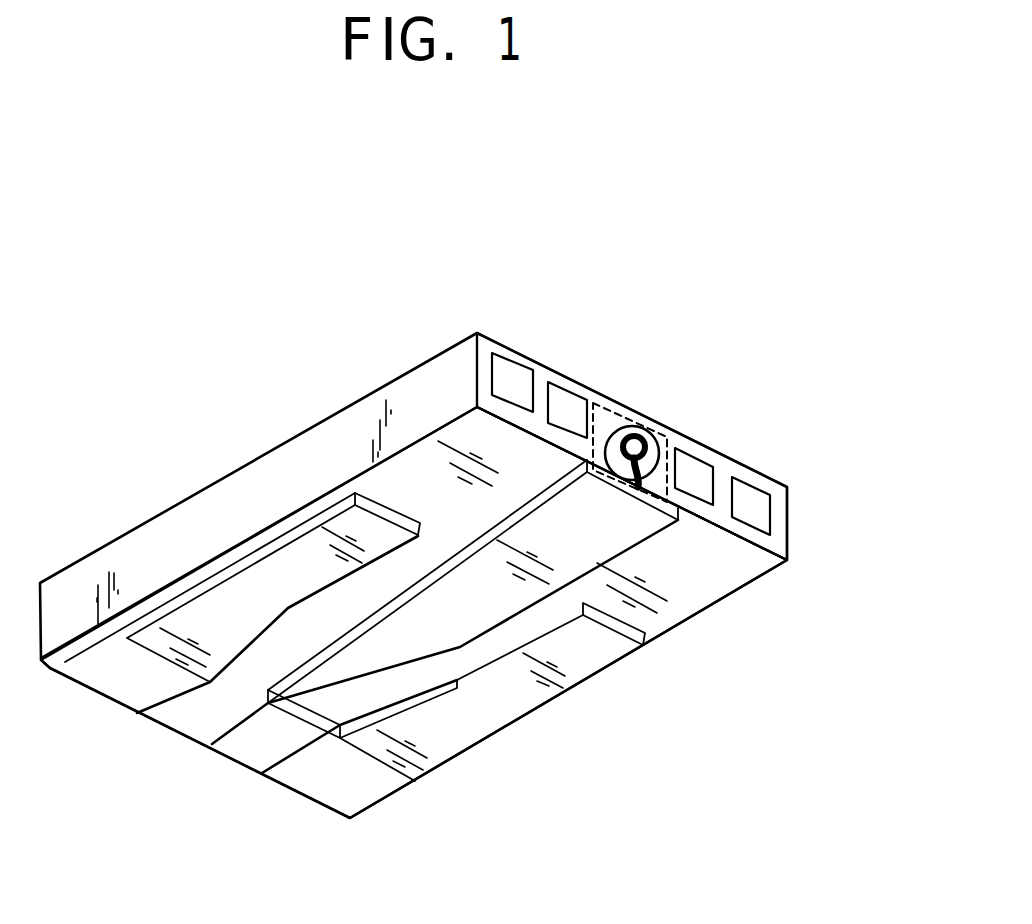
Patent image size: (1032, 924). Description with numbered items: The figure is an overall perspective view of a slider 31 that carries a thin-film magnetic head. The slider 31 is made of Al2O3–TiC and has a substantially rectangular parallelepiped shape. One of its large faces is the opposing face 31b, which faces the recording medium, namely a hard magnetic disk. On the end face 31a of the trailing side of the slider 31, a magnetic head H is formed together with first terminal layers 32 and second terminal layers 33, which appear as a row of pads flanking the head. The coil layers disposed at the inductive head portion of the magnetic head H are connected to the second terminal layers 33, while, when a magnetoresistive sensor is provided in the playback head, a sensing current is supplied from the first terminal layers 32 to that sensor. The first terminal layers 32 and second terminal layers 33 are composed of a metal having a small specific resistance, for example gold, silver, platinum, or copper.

The slider 31 is at (490, 529).
The end face 31a is at (708, 421).
The opposing face 31b is at (683, 568).
The first terminal layers 32 is at (568, 405).
The second terminal layers 33 is at (515, 372).
The magnetic head H is at (626, 421).